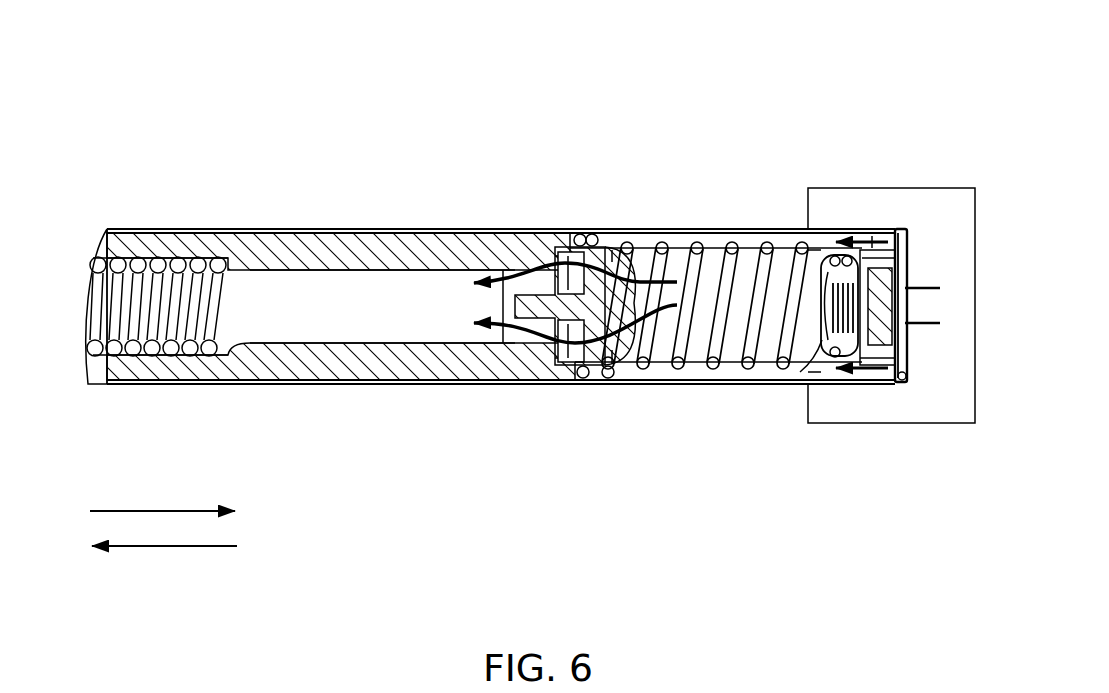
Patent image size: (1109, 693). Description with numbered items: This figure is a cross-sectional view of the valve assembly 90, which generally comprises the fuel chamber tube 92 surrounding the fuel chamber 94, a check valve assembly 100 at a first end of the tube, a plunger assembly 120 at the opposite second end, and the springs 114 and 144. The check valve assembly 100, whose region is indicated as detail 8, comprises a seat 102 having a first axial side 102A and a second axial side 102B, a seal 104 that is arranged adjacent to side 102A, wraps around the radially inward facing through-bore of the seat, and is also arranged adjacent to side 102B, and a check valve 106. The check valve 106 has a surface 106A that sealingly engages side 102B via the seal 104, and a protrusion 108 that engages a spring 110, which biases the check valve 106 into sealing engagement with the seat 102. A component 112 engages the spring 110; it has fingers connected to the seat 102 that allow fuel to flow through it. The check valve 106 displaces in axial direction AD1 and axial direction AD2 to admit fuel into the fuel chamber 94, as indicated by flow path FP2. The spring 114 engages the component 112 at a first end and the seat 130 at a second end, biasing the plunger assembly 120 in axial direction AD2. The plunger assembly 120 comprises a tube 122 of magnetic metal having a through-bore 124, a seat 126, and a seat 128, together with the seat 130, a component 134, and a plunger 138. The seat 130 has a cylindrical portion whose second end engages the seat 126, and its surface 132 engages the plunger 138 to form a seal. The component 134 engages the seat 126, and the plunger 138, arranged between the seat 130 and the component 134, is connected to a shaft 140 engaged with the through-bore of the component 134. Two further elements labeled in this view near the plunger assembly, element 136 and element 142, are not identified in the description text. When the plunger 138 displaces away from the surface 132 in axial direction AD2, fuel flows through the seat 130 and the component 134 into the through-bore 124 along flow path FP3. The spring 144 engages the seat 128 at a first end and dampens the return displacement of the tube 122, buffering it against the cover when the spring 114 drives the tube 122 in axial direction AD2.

The valve assembly 90 is at (778, 76).
The fuel chamber tube 92 is at (335, 229).
The plunger assembly 120 is at (417, 215).
The tube 122 is at (450, 250).
The seat 128 is at (228, 352).
The spring 144 is at (147, 240).
The through-bore 124 is at (378, 328).
The seat 126 is at (558, 366).
The plunger 138 is at (607, 300).
The component 134 is at (566, 364).
The piston step 142 is at (575, 366).
The upper seal ring 136 is at (598, 250).
The seat 130 is at (591, 373).
The surface 132 is at (612, 366).
The shaft 140 is at (503, 362).
The flow path FP3 is at (512, 248).
The fuel chamber 94 is at (697, 362).
The spring 114 is at (695, 250).
The detail 8 is at (828, 188).
The check valve assembly 100 is at (851, 195).
The flow path FP2 is at (878, 248).
The seat 102 is at (904, 264).
The seal 104 is at (905, 232).
The first axial side 102A is at (904, 354).
The second axial side 102B is at (895, 385).
The check valve 106 is at (846, 360).
The surface 106A is at (862, 372).
The protrusion 108 is at (856, 370).
The spring 110 is at (852, 374).
The component 112 is at (808, 372).
The axial direction AD1 is at (146, 510).
The axial direction AD2 is at (177, 548).